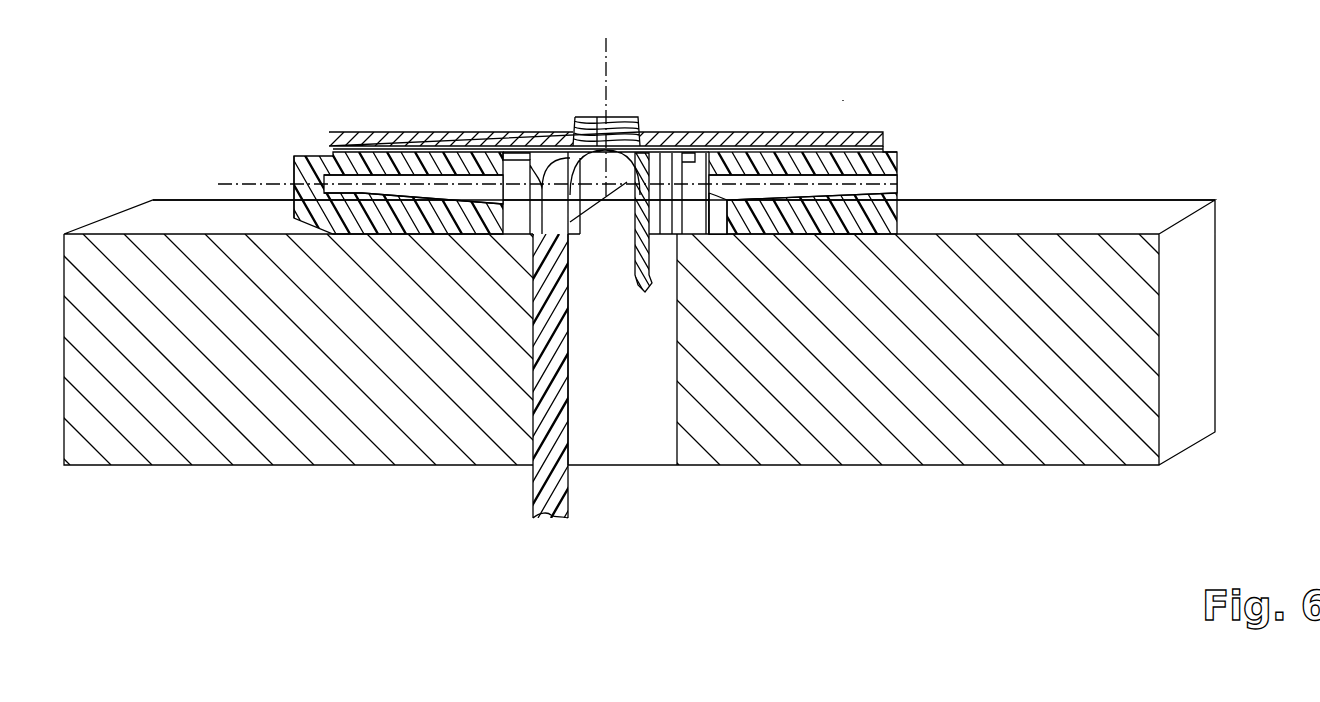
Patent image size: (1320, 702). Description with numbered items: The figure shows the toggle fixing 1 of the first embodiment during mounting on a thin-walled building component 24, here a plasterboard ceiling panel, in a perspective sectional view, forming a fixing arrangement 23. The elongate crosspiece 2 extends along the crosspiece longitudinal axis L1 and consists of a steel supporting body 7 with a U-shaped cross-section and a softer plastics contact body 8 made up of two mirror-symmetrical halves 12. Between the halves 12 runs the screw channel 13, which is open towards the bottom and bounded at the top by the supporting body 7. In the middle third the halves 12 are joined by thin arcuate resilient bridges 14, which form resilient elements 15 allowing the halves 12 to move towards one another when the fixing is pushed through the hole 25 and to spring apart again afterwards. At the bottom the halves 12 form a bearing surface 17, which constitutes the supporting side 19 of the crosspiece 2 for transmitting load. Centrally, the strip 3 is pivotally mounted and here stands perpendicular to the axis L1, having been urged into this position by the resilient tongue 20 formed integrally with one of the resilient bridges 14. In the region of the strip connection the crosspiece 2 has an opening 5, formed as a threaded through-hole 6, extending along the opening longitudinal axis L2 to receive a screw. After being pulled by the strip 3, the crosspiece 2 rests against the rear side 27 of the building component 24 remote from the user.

The toggle fixing 1 is at (305, 78).
The crosspiece 2 is at (815, 132).
The strip 3 is at (540, 500).
The opening 5 is at (597, 117).
The threaded through-hole 6 is at (615, 125).
The supporting body 7 is at (862, 142).
The contact body 8 is at (890, 150).
The halves 12 is at (899, 156).
The screw channel 13 is at (900, 176).
The resilient bridges 14 is at (527, 160).
The resilient elements 15 is at (512, 150).
The bearing surface 17 is at (897, 204).
The supporting side 19 is at (837, 236).
The resilient tongue 20 is at (645, 292).
The fixing arrangement 23 is at (843, 100).
The thin-walled building component 24 is at (983, 437).
The hole 25 is at (627, 413).
The rear side 27 is at (1115, 217).
The crosspiece longitudinal axis L1 is at (228, 184).
The opening longitudinal axis L2 is at (600, 45).